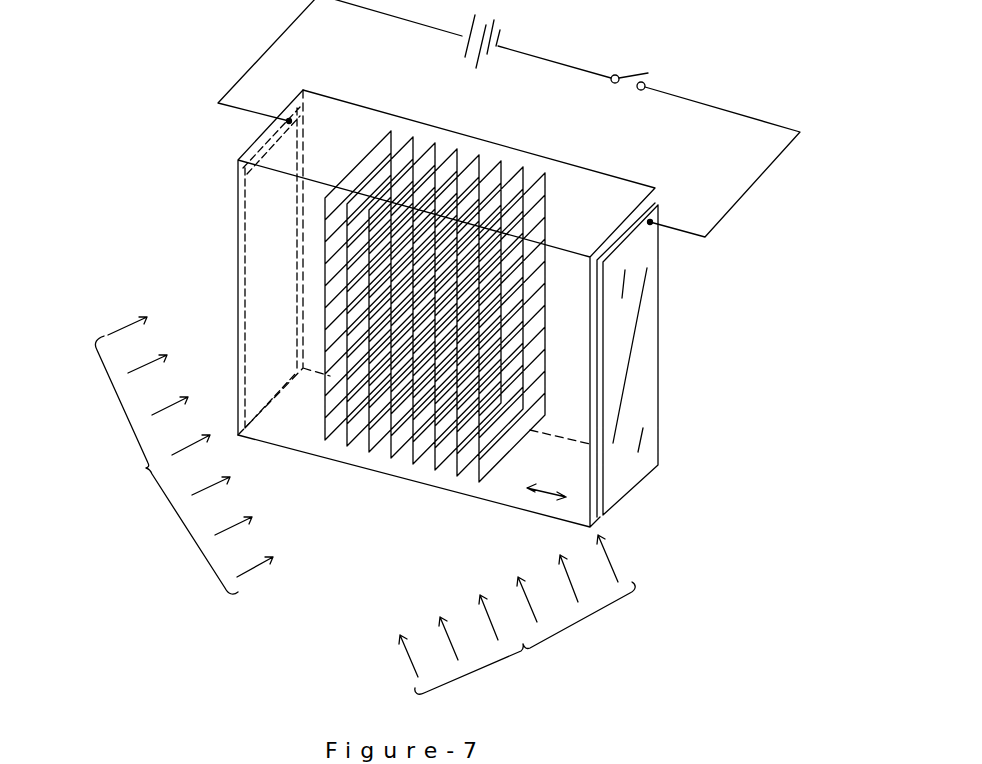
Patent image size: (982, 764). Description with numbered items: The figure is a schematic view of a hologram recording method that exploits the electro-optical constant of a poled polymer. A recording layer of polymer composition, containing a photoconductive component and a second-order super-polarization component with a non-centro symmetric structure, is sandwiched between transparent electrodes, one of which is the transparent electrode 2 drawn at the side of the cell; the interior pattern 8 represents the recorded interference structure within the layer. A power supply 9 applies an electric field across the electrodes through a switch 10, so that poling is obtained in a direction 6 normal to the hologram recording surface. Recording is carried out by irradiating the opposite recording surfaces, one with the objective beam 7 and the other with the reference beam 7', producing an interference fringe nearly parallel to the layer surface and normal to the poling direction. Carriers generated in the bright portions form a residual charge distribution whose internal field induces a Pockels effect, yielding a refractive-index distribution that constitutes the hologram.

The transparent electrode 2 is at (652, 302).
The poling direction 6 is at (540, 493).
The objective beam 7 is at (184, 455).
The reference beam 7' is at (517, 614).
The light-controlling slat array 8 is at (412, 463).
The power supply 9 is at (497, 20).
The switch 10 is at (638, 68).